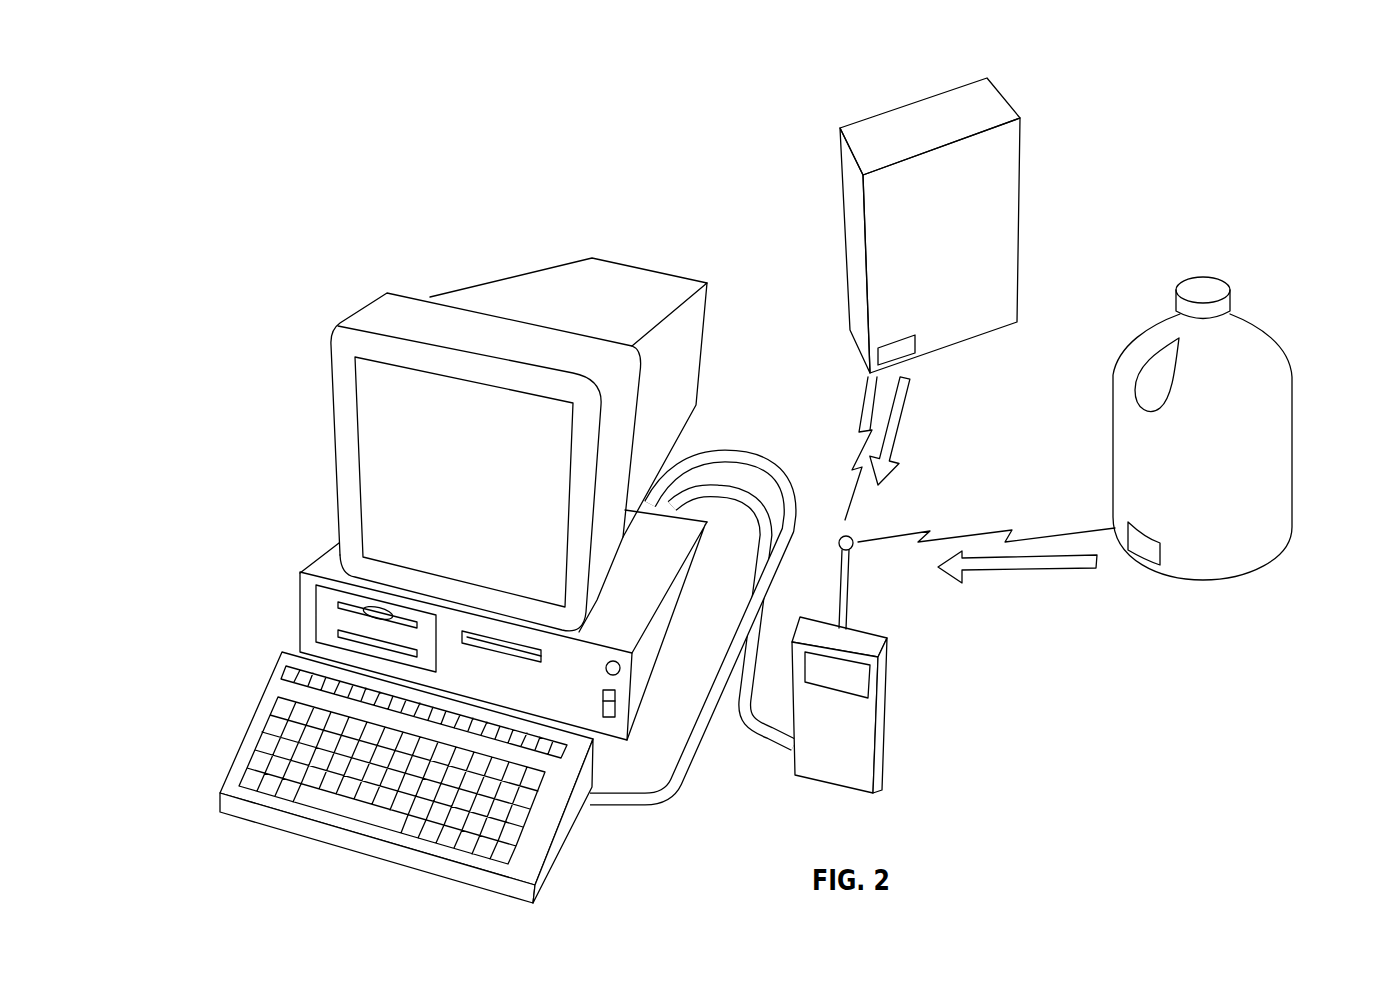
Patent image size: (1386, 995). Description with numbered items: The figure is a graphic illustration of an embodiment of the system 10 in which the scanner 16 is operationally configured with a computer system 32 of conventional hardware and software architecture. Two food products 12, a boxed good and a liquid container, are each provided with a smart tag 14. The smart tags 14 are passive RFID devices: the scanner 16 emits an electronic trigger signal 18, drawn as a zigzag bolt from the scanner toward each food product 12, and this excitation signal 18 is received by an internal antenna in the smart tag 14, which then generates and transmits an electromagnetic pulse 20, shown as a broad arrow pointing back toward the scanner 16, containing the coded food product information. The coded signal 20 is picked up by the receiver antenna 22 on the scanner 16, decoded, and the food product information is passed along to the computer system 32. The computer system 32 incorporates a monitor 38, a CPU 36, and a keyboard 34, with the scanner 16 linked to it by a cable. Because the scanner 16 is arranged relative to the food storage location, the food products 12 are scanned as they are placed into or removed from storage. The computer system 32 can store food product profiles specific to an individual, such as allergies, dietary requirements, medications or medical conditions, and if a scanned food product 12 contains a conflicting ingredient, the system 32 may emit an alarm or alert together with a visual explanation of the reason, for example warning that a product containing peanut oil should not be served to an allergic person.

The system 10 is at (592, 198).
The food product 12 is at (853, 287).
The smart tag 14 is at (913, 347).
The scanner 16 is at (883, 760).
The trigger signal 18 is at (858, 445).
The food product information signal 20 is at (900, 402).
The receiver antenna 22 is at (848, 562).
The computer system 32 is at (281, 490).
The keyboard 34 is at (323, 832).
The CPU 36 is at (307, 604).
The monitor 38 is at (365, 387).